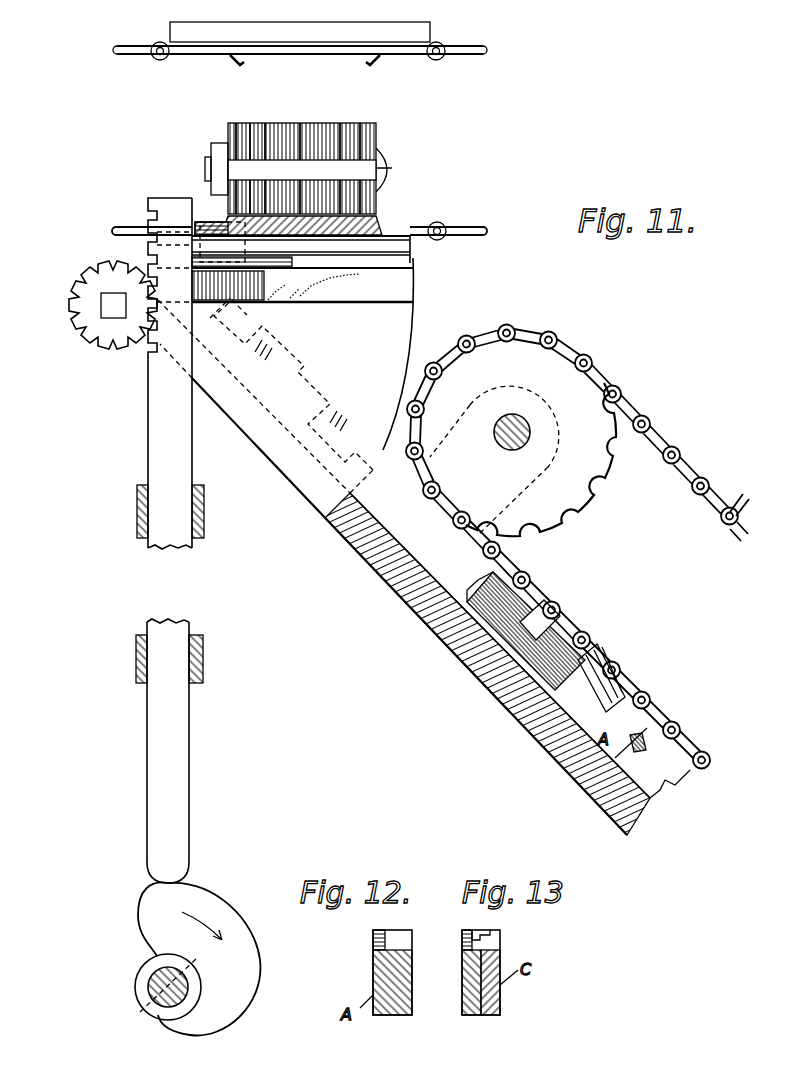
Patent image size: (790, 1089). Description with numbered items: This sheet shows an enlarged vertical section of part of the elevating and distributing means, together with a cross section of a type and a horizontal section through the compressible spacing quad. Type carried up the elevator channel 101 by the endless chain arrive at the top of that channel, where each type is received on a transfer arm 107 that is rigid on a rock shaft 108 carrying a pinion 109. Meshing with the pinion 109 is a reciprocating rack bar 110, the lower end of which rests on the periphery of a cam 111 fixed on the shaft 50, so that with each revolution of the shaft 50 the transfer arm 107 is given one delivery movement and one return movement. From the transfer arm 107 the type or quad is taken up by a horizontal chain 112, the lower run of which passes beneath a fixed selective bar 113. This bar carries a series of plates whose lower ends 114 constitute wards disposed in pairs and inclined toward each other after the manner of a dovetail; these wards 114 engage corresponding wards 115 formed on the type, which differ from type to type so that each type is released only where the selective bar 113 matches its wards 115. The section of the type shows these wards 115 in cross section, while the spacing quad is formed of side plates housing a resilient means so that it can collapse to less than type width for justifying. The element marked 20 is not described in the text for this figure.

In FIG. 11, the horizontal chain 112 is at (460, 66).
In FIG. 11, the selective bar 113 is at (378, 138).
In FIG. 11, the wards 114 is at (376, 206).
In FIG. 11, the wards on the type 115 is at (371, 232).
In FIG. 12, the wards on the type 115 is at (397, 928).
In FIG. 11, the transfer arm 107 is at (400, 292).
In FIG. 11, the pinion 109 is at (78, 302).
In FIG. 11, the rock shaft 108 is at (110, 312).
In FIG. 11, the rack bar 110 is at (160, 428).
In FIG. 11, the elevator channel 101 is at (424, 566).
In FIG. 11, the guide base 20 is at (588, 793).
In FIG. 11, the cam 111 is at (205, 897).
In FIG. 11, the shaft 50 is at (150, 995).